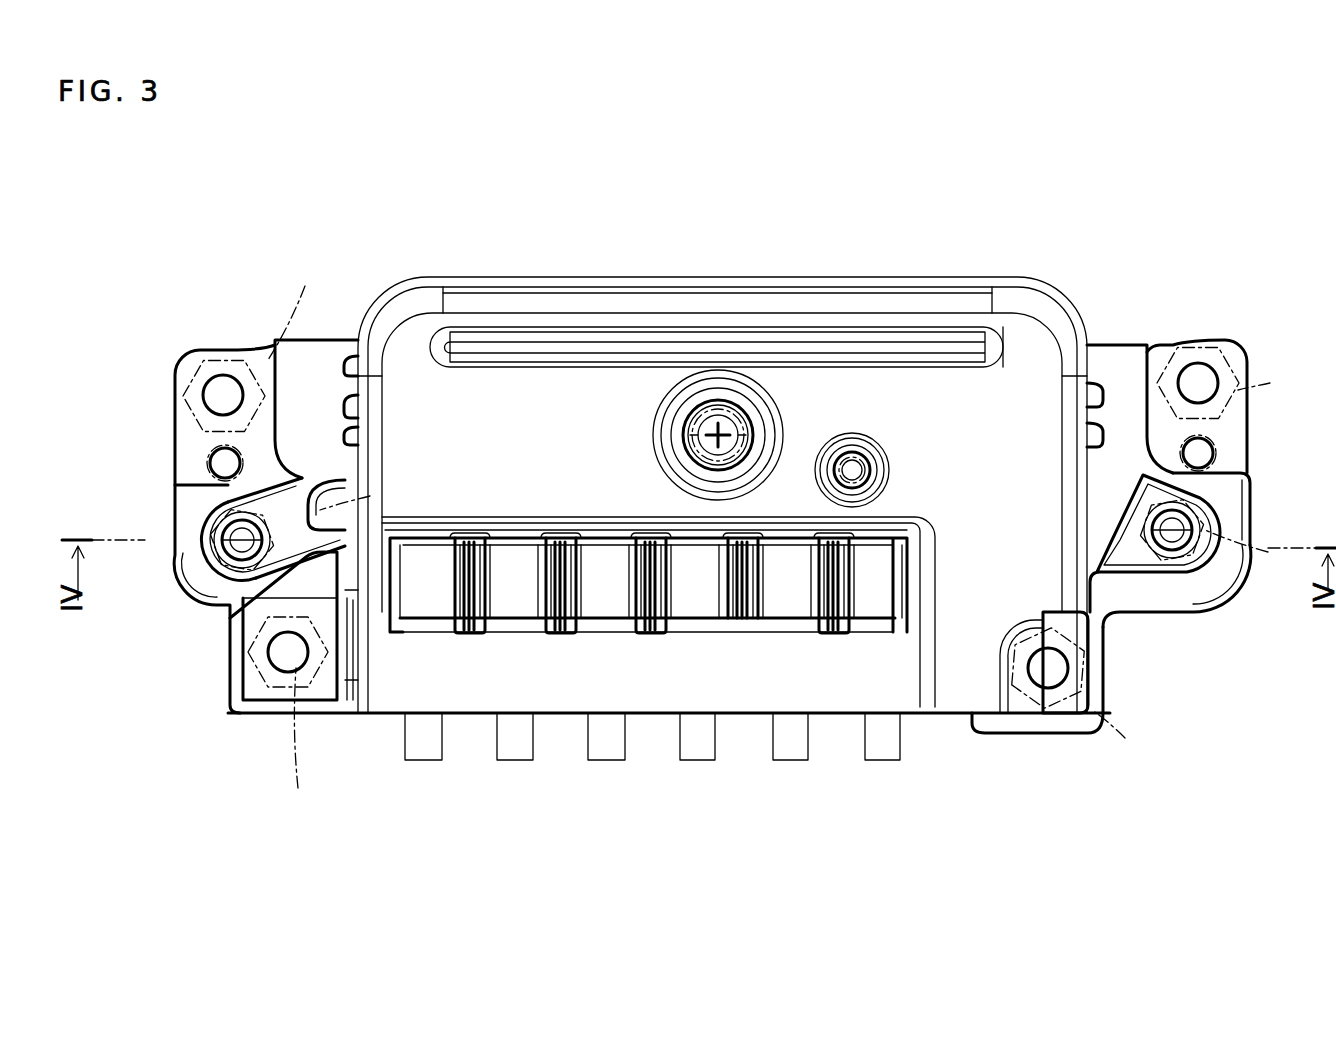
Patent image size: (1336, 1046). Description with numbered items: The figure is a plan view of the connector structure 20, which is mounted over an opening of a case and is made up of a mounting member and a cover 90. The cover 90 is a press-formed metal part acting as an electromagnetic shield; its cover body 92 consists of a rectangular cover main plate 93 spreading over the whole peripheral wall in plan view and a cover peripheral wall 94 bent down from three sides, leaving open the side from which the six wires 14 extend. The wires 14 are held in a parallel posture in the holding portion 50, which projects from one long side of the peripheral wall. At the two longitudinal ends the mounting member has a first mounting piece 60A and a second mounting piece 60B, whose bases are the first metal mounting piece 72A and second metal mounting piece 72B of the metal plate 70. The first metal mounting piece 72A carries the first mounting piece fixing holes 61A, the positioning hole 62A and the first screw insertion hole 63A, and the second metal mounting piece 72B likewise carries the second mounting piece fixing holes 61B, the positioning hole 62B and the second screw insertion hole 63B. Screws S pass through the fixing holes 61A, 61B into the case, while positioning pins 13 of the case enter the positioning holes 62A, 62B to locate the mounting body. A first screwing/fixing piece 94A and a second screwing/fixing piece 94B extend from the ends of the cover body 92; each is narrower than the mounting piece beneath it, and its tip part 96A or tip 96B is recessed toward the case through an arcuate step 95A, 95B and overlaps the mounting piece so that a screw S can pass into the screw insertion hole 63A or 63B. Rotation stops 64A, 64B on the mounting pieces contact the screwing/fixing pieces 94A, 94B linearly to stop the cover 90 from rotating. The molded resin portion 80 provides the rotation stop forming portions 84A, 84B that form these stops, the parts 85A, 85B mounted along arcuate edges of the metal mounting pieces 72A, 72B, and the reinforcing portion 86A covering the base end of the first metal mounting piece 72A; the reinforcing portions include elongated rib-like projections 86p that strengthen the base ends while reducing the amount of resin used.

The connector structure 20 is at (1097, 232).
The positioning pins 13 is at (206, 466).
The wires 14 is at (716, 738).
The holding portion 50 is at (420, 695).
The metal plate 70 is at (1168, 334).
The molded resin portion 80 is at (508, 565).
The cover 90 is at (970, 264).
The cover body 92 is at (893, 385).
The cover main plate 93 is at (782, 385).
The cover peripheral wall 94 is at (1032, 278).
The projections 86p is at (362, 424).
The reinforcing portion 86A is at (342, 340).
The first metal mounting piece 72A is at (205, 347).
The first mounting piece fixing holes 61A is at (226, 378).
The positioning hole 62A is at (208, 455).
The first screwing/fixing piece 94A is at (292, 475).
The rotation stop 64A is at (190, 518).
The first screw insertion hole 63A is at (210, 545).
The first mounting piece 60A is at (186, 598).
The rotation stop forming portion 84A is at (238, 590).
The part mounted on periphery of first metal mounting piece 85A is at (248, 562).
The tip part of first screwing/fixing piece 96A is at (230, 620).
The arcuate step 95A is at (262, 638).
The second metal mounting piece 72B is at (1218, 342).
The second mounting piece fixing holes 61B is at (1205, 382).
The positioning hole 62B is at (1213, 453).
The second screwing/fixing piece 94B is at (1208, 497).
The tip of second screwing/fixing piece 96B is at (1218, 525).
The second screw insertion hole 63B is at (1192, 538).
The rotation stop forming portion 84B is at (1222, 585).
The part mounted on periphery of second metal mounting piece 85B is at (1222, 600).
The rotation stop 64B is at (1160, 626).
The second mounting piece 60B is at (1214, 626).
The arcuate step 95B is at (1120, 600).
The screws S is at (783, 537).